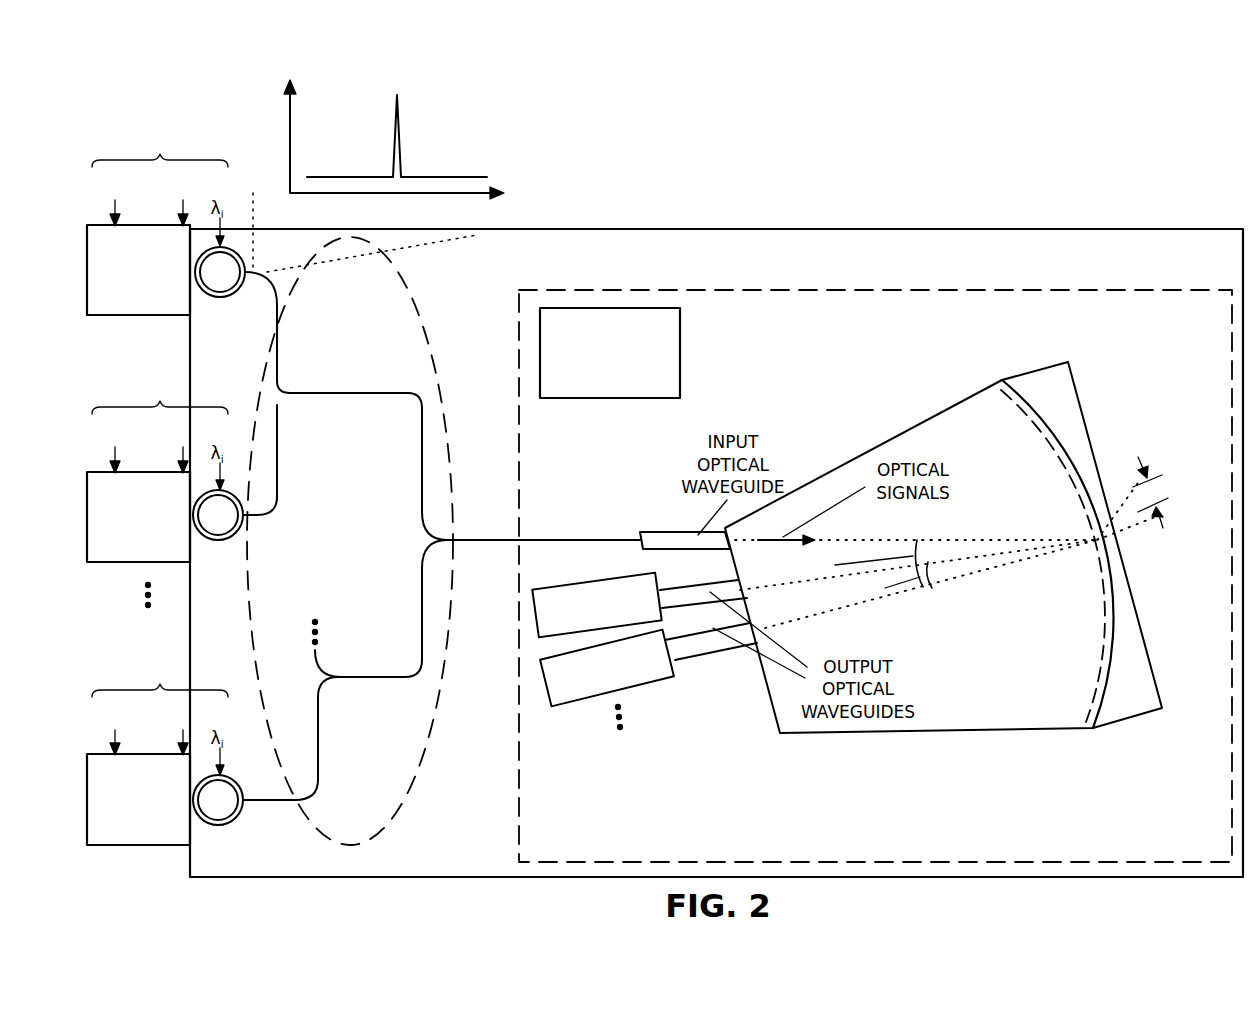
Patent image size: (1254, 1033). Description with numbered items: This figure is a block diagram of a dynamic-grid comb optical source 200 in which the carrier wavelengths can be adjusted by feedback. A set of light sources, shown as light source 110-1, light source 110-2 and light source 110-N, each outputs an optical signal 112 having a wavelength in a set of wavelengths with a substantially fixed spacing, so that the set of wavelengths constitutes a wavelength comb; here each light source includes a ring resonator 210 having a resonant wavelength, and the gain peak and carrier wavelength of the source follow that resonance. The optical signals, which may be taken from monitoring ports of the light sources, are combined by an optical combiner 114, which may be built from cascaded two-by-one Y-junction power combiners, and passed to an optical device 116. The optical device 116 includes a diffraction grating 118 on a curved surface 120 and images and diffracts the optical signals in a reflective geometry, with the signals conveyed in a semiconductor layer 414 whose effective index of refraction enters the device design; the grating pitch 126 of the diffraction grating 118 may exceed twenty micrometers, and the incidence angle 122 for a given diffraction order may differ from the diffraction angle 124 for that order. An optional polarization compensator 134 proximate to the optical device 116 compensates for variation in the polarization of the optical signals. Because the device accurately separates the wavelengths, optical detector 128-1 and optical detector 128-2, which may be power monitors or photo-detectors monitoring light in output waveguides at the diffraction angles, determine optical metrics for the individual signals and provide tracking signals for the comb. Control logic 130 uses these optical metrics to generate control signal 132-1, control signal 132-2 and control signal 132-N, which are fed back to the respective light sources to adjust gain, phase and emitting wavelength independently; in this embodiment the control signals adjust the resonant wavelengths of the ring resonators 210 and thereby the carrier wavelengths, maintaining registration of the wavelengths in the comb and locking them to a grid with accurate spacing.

The dynamic-grid comb optical source 200 is at (1080, 127).
The optical signal 112 is at (399, 143).
The control signal 132-1 is at (160, 158).
The control signal 132-2 is at (160, 405).
The control signal 132-N is at (160, 688).
The light source 110-1 is at (138, 270).
The light source 110-2 is at (138, 517).
The light source 110-N is at (138, 799).
The ring resonator 210 is at (216, 282).
The optical combiner 114 is at (441, 541).
The semiconductor layer 414 is at (875, 550).
The optical device 116 is at (875, 321).
The control logic 130 is at (610, 353).
The polarization compensator 134 is at (947, 705).
The curved surface 120 is at (1112, 690).
The diffraction grating 118 is at (1073, 467).
The grating pitch 126 is at (1152, 493).
The incidence angle 122 is at (862, 568).
The diffraction angle 124 is at (890, 587).
The optical detector 128-1 is at (596, 605).
The optical detector 128-2 is at (607, 668).